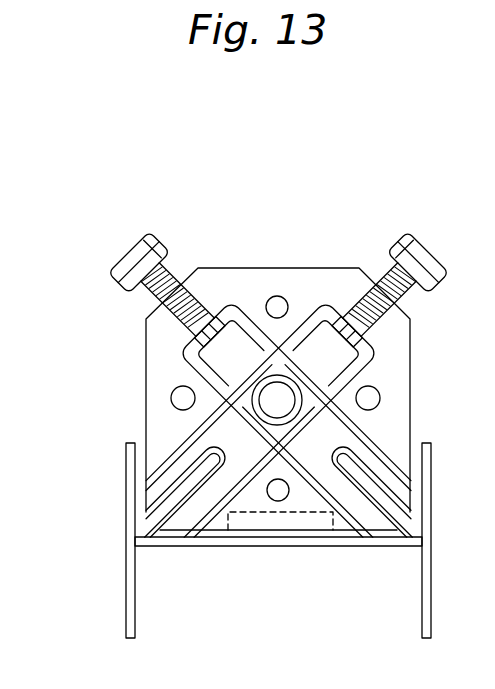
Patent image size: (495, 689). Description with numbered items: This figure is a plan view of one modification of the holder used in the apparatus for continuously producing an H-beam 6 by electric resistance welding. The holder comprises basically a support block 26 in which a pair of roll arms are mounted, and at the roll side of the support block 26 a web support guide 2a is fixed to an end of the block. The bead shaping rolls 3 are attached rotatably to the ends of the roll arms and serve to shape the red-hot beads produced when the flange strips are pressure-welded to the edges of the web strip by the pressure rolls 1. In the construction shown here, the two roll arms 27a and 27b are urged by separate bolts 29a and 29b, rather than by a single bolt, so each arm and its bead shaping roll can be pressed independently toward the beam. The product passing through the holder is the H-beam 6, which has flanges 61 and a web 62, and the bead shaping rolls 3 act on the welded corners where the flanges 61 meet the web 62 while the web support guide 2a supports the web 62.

The pressure rolls 1 is at (273, 405).
The web support guide 2a is at (292, 536).
The bead shaping rolls 3 is at (153, 535).
The H-beam 6 is at (287, 540).
The support block 26 is at (399, 366).
The roll arm 27a is at (171, 455).
The roll arm 27b is at (334, 330).
The bolt 29a is at (120, 247).
The bolt 29b is at (437, 251).
The flanges 61 is at (127, 613).
The web 62 is at (221, 549).